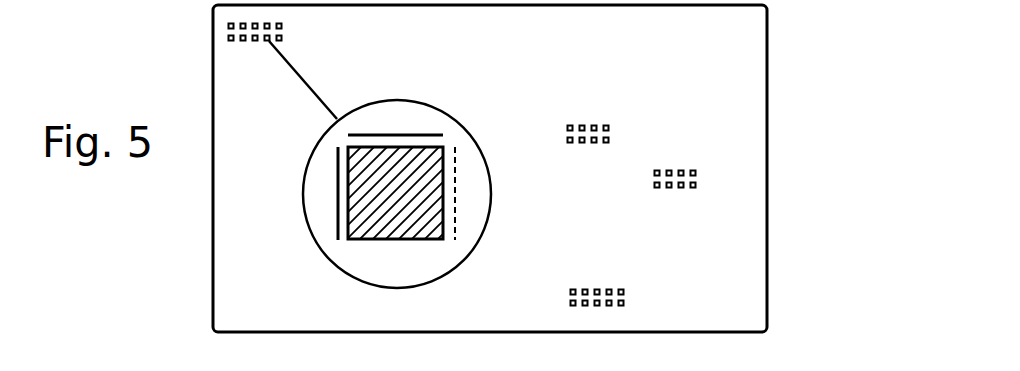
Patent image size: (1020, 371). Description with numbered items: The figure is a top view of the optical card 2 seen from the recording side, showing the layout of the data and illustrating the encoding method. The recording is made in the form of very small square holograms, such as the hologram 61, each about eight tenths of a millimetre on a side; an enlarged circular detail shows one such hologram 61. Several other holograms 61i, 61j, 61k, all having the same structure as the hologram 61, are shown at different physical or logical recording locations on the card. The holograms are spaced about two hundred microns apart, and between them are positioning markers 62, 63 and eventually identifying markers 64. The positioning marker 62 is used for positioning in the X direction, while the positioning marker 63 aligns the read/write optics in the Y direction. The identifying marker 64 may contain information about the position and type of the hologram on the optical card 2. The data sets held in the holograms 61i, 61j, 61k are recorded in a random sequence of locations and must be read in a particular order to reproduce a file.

The optical card 2 is at (490, 168).
The hologram 61 is at (441, 148).
The hologram 61i is at (582, 122).
The hologram 61j is at (679, 170).
The hologram 61k is at (620, 290).
The positioning marker 62 is at (337, 229).
The positioning marker 63 is at (388, 133).
The identifying marker 64 is at (440, 217).